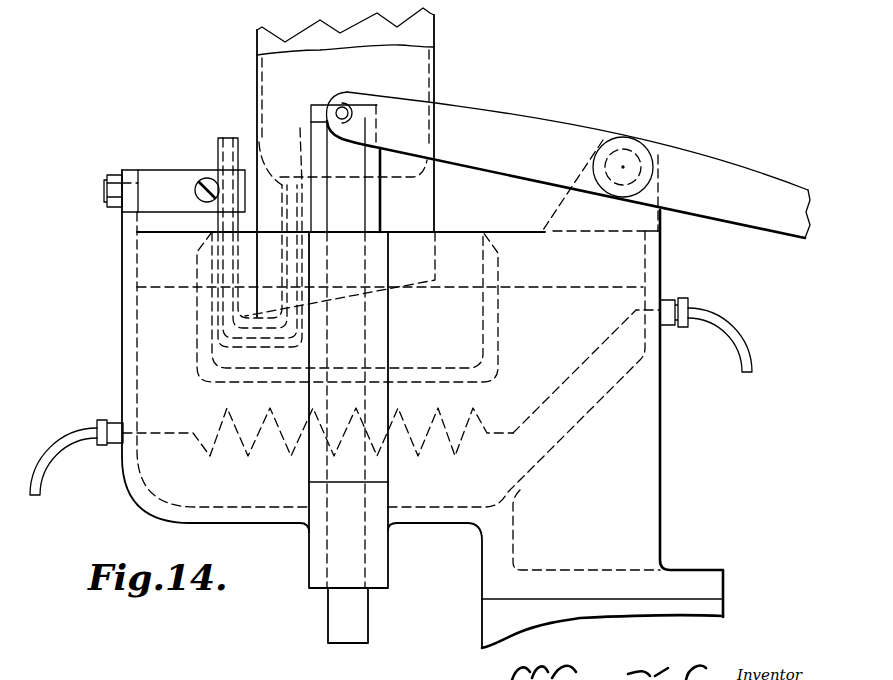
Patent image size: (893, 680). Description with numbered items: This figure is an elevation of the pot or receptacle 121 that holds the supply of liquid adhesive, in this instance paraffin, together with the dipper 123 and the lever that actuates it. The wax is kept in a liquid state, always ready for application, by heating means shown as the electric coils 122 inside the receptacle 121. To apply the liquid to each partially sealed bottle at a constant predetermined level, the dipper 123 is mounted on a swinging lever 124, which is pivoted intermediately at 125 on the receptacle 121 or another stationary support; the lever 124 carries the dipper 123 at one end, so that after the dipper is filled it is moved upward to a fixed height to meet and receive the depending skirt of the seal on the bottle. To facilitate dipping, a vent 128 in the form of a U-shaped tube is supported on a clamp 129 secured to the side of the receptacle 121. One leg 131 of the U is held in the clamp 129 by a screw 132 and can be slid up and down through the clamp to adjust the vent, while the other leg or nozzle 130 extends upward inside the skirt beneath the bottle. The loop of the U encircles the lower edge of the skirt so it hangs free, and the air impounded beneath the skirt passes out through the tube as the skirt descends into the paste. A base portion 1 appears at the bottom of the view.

The base frame 1 is at (490, 613).
The receptacle 121 is at (123, 363).
The electric coils 122 is at (210, 456).
The dipper 123 is at (199, 352).
The swinging lever 124 is at (568, 165).
The pivot 125 is at (624, 163).
The vent 128 is at (221, 223).
The clamp 129 is at (163, 146).
The leg or nozzle 130 is at (322, 237).
The leg 131 is at (239, 142).
The screw 132 is at (207, 178).